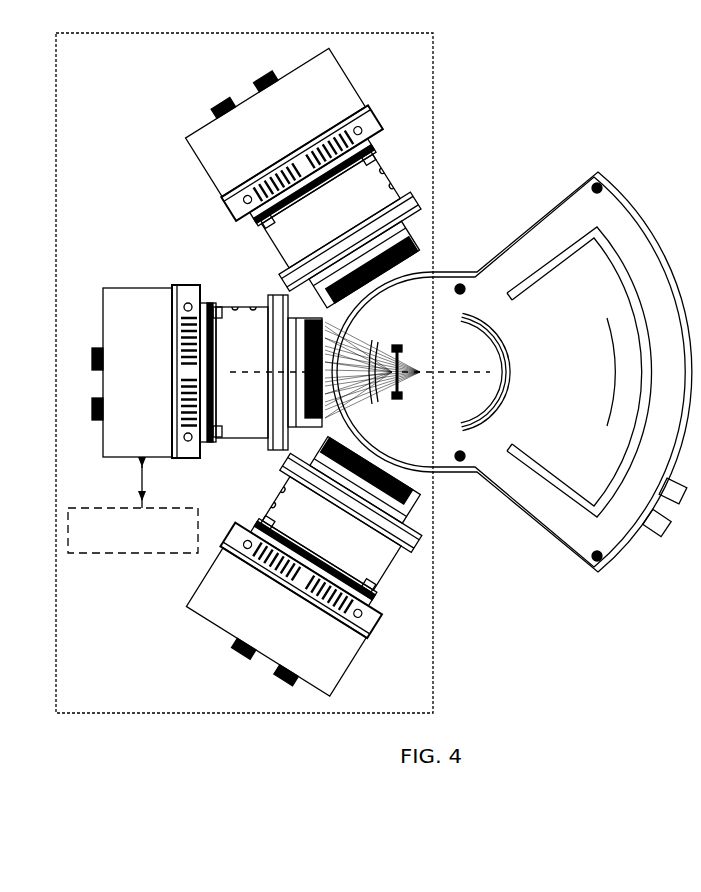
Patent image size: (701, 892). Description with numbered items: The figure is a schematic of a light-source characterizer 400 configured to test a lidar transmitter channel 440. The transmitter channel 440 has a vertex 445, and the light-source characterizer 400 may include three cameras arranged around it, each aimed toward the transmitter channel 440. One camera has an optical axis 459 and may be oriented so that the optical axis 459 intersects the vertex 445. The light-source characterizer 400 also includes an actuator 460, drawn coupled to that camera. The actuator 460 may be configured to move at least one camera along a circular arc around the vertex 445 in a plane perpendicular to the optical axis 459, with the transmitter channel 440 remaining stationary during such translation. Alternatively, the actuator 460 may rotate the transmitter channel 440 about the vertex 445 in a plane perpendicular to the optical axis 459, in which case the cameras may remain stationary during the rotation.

The light-source characterizer 400 is at (213, 700).
The transmitter channel 440 is at (576, 406).
The vertex 445 is at (418, 382).
The optical axis 459 is at (253, 374).
The actuator 460 is at (187, 543).